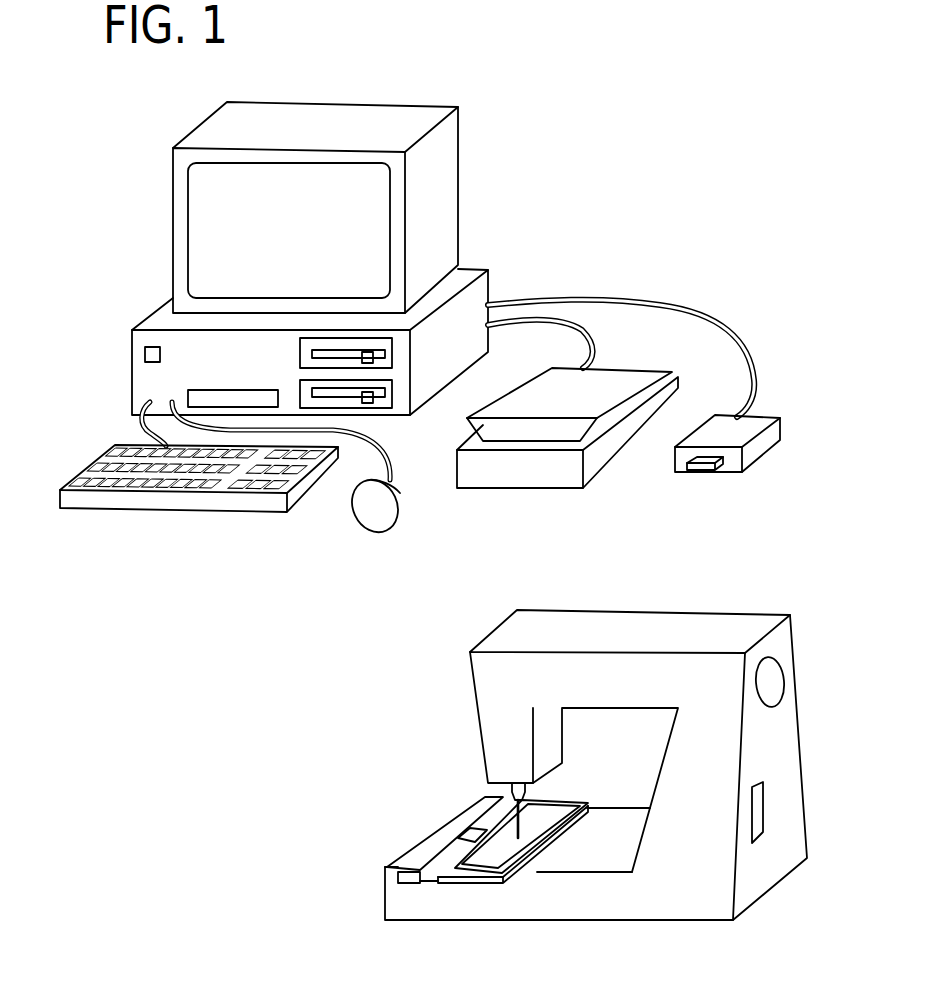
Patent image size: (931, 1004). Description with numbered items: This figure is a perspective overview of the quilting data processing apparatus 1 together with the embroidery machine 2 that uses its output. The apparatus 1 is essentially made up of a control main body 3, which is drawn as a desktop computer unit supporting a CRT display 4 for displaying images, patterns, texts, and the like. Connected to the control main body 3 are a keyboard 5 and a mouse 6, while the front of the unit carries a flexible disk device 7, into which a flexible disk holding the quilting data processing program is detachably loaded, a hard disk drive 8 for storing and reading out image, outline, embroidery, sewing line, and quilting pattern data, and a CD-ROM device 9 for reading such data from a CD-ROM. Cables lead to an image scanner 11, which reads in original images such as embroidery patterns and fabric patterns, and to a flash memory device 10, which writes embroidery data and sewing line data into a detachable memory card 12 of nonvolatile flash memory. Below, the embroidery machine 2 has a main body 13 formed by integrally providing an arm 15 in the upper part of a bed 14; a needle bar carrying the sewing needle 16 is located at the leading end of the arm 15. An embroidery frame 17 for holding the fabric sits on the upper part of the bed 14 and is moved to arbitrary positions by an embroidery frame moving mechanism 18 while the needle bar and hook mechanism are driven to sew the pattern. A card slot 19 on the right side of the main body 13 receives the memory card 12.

The quilting data processing apparatus 1 is at (491, 80).
The embroidery machine 2 is at (432, 653).
The control main body 3 is at (279, 403).
The CRT display 4 is at (173, 255).
The keyboard 5 is at (123, 500).
The mouse 6 is at (363, 517).
The flexible disk device 7 is at (385, 356).
The hard disk drive 8 is at (218, 398).
The CD-ROM device 9 is at (387, 403).
The flash memory device 10 is at (736, 474).
The image scanner 11 is at (550, 480).
The memory card 12 is at (690, 473).
The main body 13 is at (660, 788).
The bed 14 is at (637, 902).
The arm 15 is at (492, 732).
The sewing needle 16 is at (526, 833).
The embroidery frame 17 is at (467, 883).
The embroidery frame moving mechanism 18 is at (442, 847).
The card slot 19 is at (760, 828).